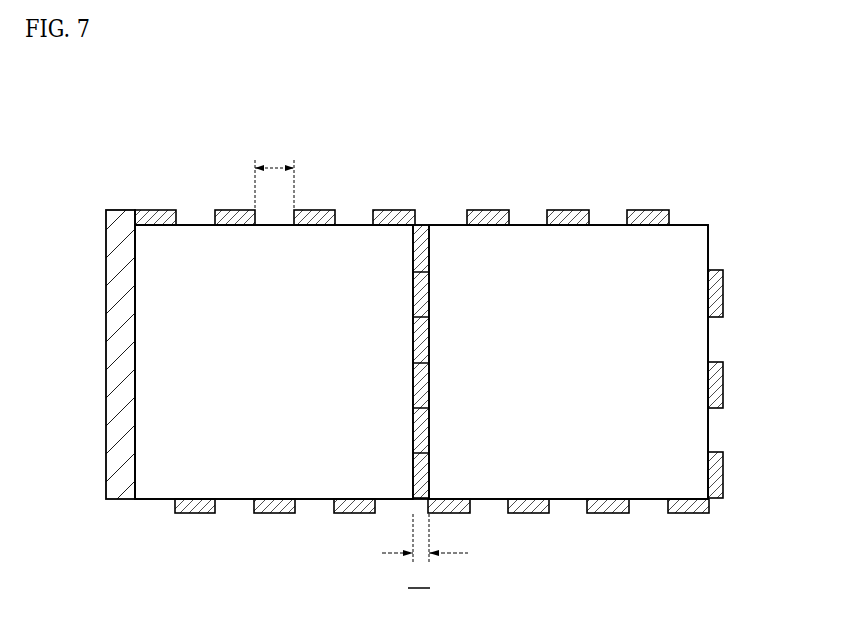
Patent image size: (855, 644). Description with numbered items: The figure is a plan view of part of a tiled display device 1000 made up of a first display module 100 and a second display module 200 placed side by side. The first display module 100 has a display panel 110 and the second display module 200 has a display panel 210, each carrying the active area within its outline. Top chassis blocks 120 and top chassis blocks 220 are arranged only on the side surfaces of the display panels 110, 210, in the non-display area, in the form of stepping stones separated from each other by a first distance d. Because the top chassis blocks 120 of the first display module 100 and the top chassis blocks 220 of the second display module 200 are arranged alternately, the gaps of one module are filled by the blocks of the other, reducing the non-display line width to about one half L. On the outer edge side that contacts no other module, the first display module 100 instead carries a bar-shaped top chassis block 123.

The tiled display device 1000 is at (421, 106).
The first display module 100 is at (225, 195).
The display panel 110 is at (156, 350).
The top chassis blocks 120 is at (160, 210).
The top chassis block 123 is at (120, 437).
The second display module 200 is at (510, 195).
The display panel 210 is at (665, 340).
The top chassis blocks 220 is at (642, 210).